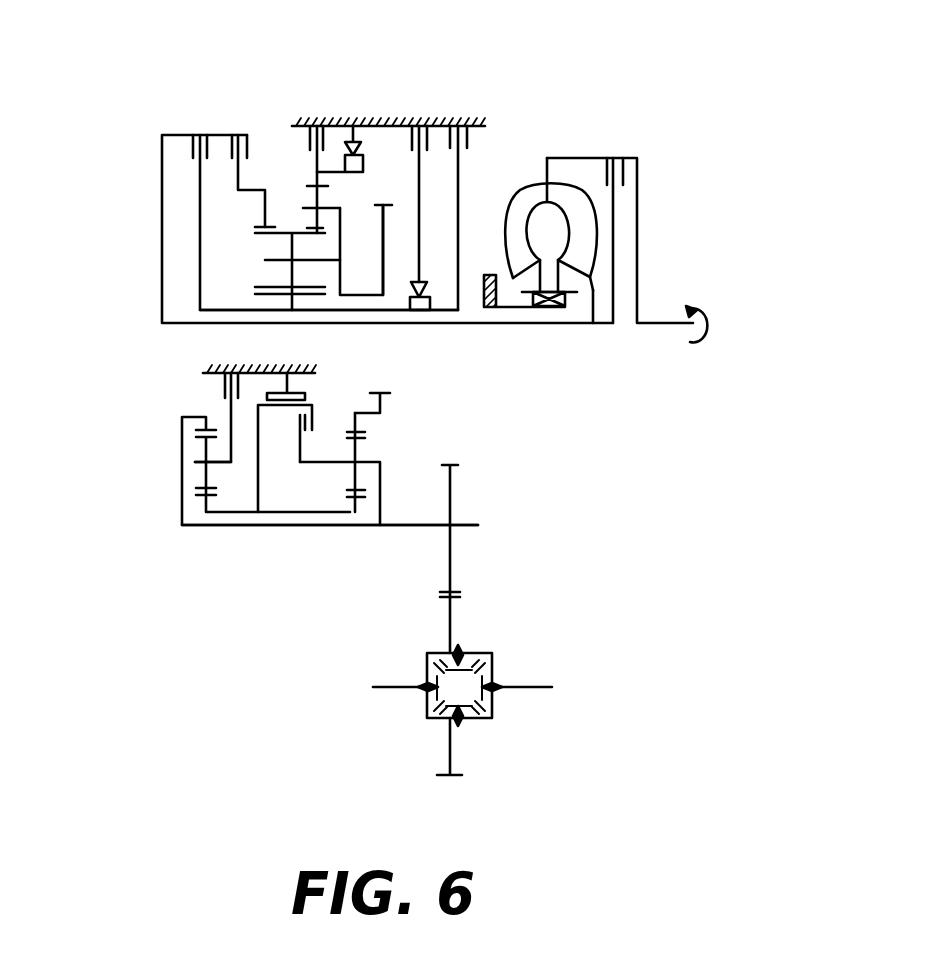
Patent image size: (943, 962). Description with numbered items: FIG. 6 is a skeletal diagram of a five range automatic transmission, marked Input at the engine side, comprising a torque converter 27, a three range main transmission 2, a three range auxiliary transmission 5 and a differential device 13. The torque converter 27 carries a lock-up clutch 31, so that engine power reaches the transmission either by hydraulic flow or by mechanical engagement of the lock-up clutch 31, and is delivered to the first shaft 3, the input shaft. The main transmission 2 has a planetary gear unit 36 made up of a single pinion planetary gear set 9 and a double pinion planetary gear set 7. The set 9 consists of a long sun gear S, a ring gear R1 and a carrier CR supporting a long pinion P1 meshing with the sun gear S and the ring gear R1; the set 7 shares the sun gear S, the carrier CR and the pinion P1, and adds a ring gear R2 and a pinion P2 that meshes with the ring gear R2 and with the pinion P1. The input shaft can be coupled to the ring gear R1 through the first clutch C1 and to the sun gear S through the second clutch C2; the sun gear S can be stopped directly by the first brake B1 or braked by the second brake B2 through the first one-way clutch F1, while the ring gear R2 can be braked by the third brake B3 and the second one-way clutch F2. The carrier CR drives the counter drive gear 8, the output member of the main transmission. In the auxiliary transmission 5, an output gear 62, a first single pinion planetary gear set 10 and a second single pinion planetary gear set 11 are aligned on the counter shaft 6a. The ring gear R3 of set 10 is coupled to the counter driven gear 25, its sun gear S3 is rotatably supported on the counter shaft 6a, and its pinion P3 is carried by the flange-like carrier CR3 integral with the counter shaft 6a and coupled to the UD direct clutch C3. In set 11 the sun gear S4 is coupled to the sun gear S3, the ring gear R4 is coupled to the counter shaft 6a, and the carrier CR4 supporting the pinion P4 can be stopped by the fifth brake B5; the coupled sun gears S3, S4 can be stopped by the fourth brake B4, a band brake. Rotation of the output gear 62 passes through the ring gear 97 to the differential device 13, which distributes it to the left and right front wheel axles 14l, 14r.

The main transmission 2 is at (135, 132).
The planetary gear unit 36 is at (286, 50).
The single pinion planetary gear set 9 is at (265, 180).
The double pinion planetary gear set 7 is at (298, 174).
The counter drive gear 8 is at (383, 202).
The torque converter 27 is at (523, 179).
The lock-up clutch 31 is at (614, 157).
The first shaft 3 is at (568, 325).
The auxiliary transmission 5 is at (137, 375).
The counter driven gear 25 is at (382, 392).
The output gear 62 is at (453, 492).
The ring gear 97 is at (453, 614).
The differential device 13 is at (498, 655).
The second single pinion planetary gear set 11 is at (205, 527).
The first single pinion planetary gear set 10 is at (353, 527).
The counter shaft 6a is at (464, 531).
The left front wheel axle 14l is at (390, 688).
The right front wheel axle 14r is at (525, 693).
The first clutch C1 is at (235, 128).
The second clutch C2 is at (188, 128).
The UD direct clutch C3 is at (305, 448).
The first brake B1 is at (452, 199).
The second brake B2 is at (409, 185).
The third brake B3 is at (388, 119).
The fourth brake B4 is at (287, 366).
The fifth brake B5 is at (255, 397).
The first one-way clutch F1 is at (427, 277).
The second one-way clutch F2 is at (347, 130).
The ring gear R1 is at (256, 227).
The long pinion P1 is at (278, 247).
The long sun gear S is at (270, 292).
The ring gear R2 is at (322, 186).
The pinion P2 is at (326, 218).
The common carrier CR is at (342, 274).
The ring gear R3 is at (366, 432).
The pinion P3 is at (353, 472).
The sun gear S3 is at (352, 503).
The carrier CR3 is at (373, 463).
The ring gear R4 is at (204, 427).
The pinion P4 is at (195, 461).
The sun gear S4 is at (208, 496).
The carrier CR4 is at (222, 463).
The input Input is at (667, 330).